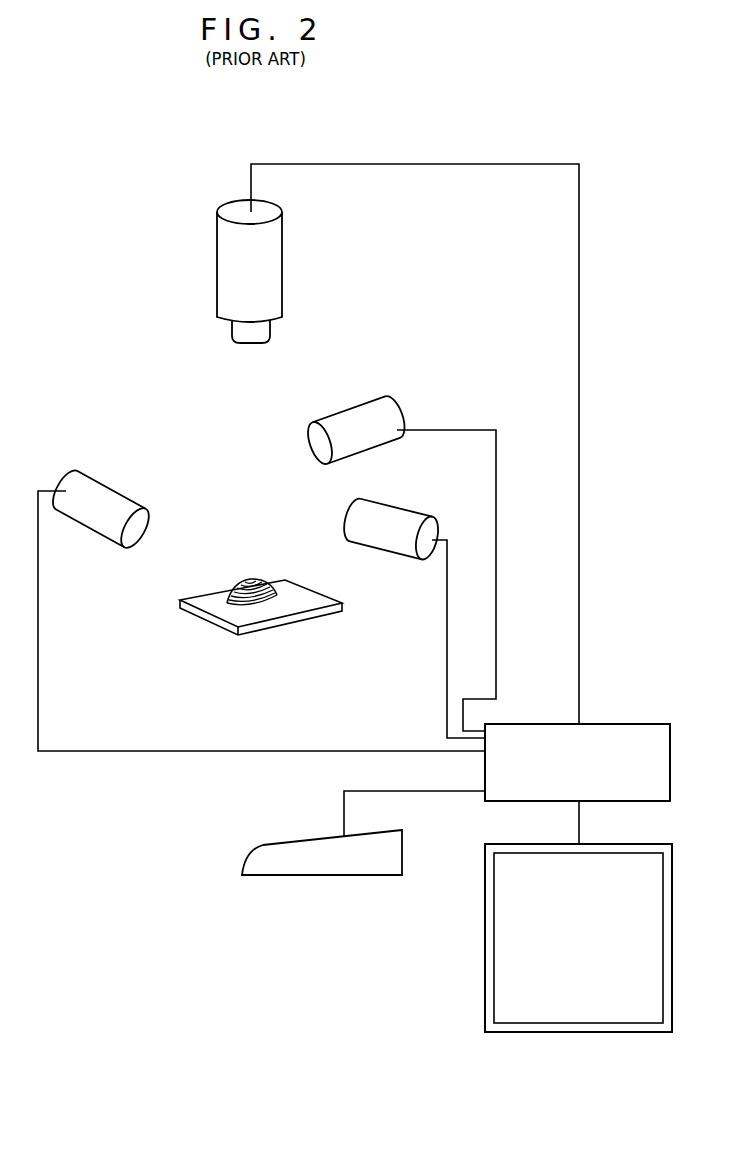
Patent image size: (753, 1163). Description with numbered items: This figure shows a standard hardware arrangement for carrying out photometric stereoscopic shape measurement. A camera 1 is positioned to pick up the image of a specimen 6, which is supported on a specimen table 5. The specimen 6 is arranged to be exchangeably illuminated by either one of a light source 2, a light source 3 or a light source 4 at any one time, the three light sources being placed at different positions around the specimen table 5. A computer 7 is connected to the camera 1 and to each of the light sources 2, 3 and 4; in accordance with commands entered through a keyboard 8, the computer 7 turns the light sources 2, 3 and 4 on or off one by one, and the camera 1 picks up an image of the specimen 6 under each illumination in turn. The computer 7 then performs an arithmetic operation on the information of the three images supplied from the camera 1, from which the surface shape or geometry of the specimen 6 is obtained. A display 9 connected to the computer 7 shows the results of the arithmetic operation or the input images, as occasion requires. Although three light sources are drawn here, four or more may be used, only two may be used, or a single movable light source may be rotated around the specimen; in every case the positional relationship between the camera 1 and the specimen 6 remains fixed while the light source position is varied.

The camera 1 is at (215, 267).
The light source 2 is at (119, 495).
The light source 3 is at (350, 413).
The light source 4 is at (408, 504).
The specimen table 5 is at (305, 625).
The specimen 6 is at (249, 578).
The computer 7 is at (641, 722).
The keyboard 8 is at (270, 845).
The display 9 is at (485, 948).